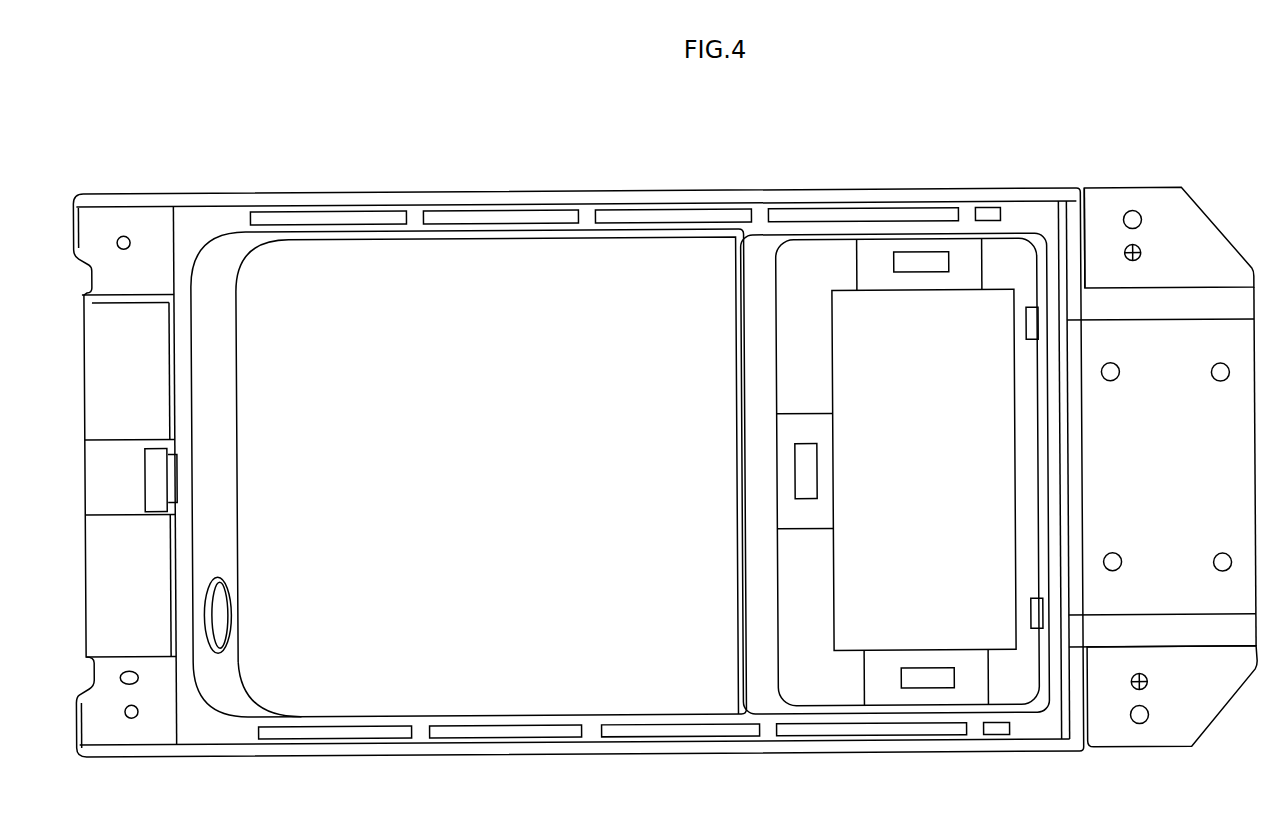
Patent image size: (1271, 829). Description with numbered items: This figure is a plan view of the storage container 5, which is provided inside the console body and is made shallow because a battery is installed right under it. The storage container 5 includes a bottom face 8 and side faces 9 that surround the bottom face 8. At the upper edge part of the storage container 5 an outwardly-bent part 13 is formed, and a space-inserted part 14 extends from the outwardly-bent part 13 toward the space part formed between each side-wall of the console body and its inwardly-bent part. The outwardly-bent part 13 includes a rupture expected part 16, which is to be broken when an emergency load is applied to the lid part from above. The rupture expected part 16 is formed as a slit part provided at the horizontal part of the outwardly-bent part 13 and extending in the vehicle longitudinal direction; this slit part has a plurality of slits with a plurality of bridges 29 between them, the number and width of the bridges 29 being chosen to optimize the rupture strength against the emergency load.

The storage container 5 is at (468, 396).
The bottom face 8 is at (473, 282).
The side faces 9 is at (495, 238).
The outwardly-bent part 13 is at (213, 222).
The space-inserted part 14 is at (265, 200).
The rupture expected part 16 is at (325, 222).
The bridges 29 is at (415, 217).